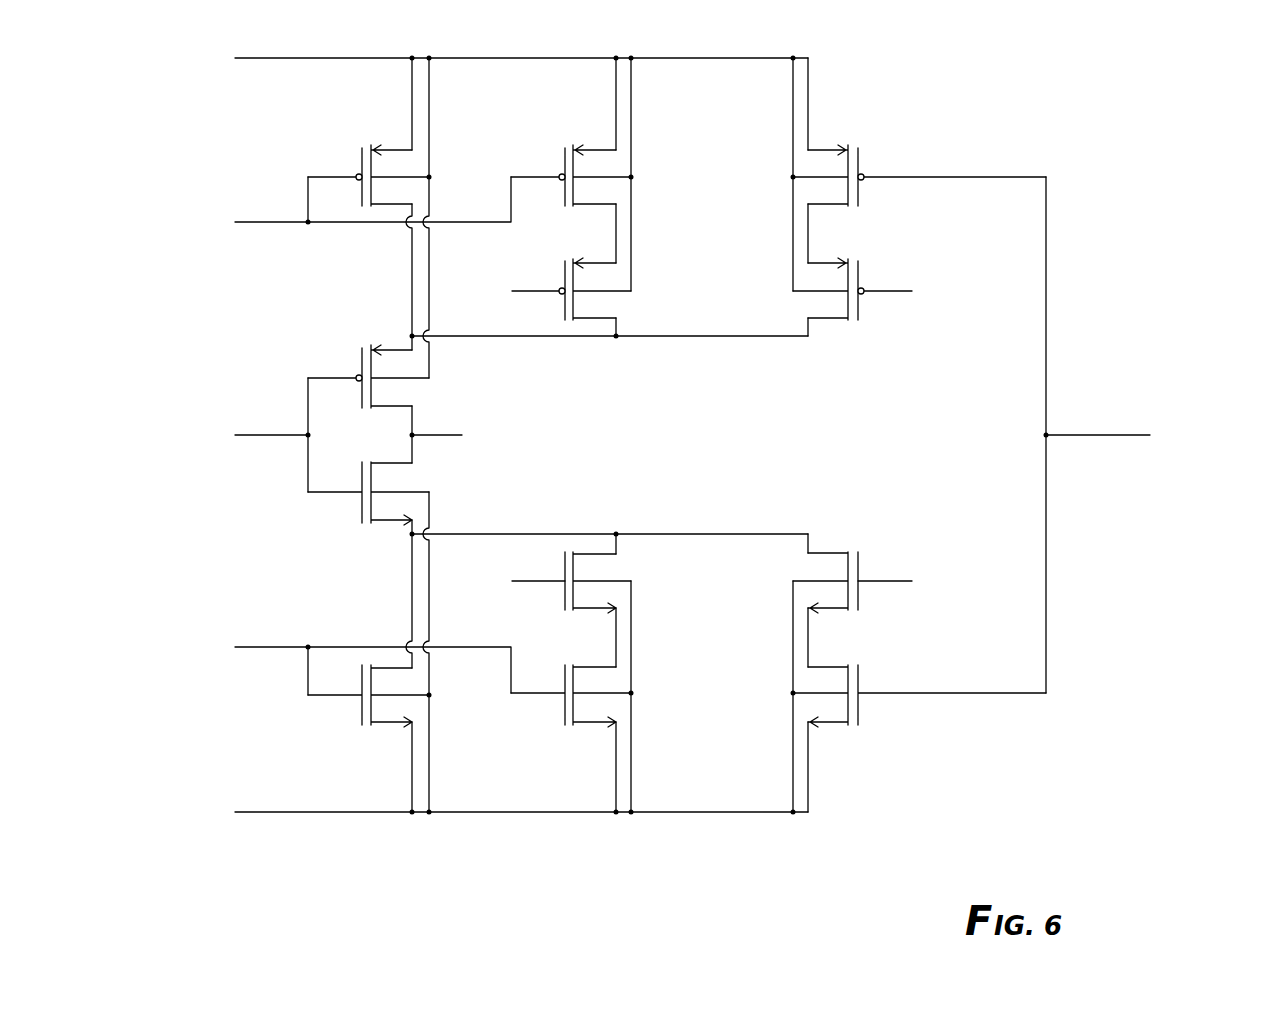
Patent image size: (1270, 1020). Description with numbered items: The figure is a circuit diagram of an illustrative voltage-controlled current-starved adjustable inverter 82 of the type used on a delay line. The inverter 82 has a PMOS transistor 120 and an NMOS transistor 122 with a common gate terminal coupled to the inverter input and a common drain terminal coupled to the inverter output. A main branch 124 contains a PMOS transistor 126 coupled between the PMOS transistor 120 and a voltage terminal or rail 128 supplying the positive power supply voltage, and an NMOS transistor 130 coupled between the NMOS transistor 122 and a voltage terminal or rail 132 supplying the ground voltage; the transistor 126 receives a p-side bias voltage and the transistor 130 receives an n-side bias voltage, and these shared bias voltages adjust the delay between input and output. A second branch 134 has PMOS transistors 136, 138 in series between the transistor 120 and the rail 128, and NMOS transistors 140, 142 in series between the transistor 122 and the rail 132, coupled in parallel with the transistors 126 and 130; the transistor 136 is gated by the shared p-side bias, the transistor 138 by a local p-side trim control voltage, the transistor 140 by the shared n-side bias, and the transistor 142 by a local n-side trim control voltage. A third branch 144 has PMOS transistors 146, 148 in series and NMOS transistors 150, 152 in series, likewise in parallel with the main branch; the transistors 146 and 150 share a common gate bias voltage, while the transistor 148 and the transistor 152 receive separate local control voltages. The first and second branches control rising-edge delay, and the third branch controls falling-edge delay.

The inverter 82 is at (1168, 82).
The PMOS transistor 120 is at (366, 335).
The NMOS transistor 122 is at (365, 532).
The main branch 124 is at (415, 865).
The PMOS transistor 126 is at (366, 138).
The voltage terminal or rail 128 is at (386, 57).
The NMOS transistor 130 is at (370, 733).
The voltage terminal or rail 132 is at (331, 812).
The second branch 134 is at (612, 865).
The PMOS transistor 136 is at (655, 165).
The PMOS transistor 138 is at (657, 285).
The NMOS transistor 140 is at (652, 707).
The NMOS transistor 142 is at (650, 580).
The third branch 144 is at (790, 857).
The PMOS transistor 146 is at (870, 133).
The PMOS transistor 148 is at (863, 335).
The NMOS transistor 150 is at (870, 717).
The NMOS transistor 152 is at (893, 600).